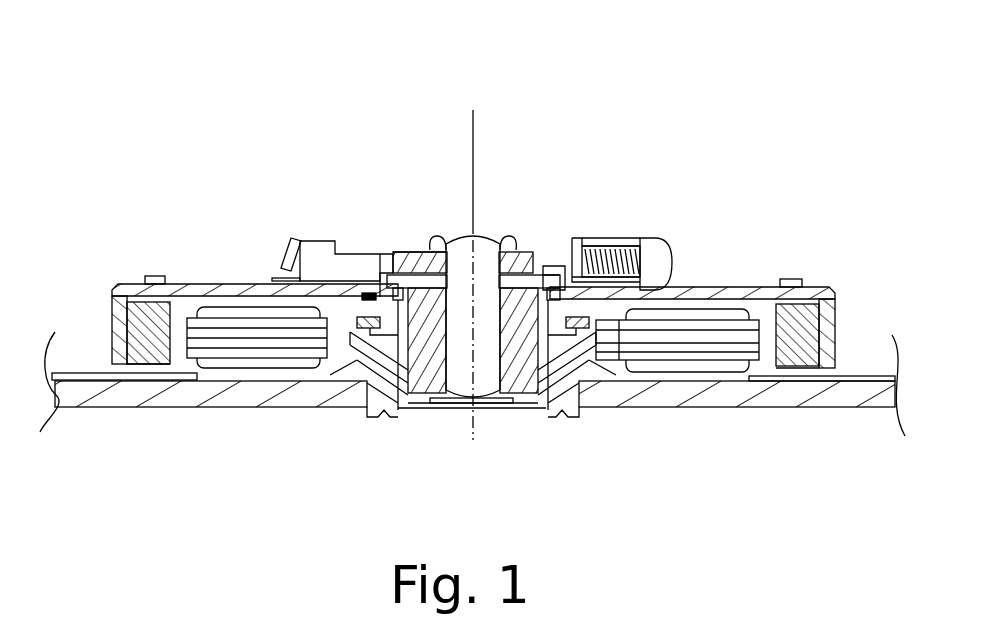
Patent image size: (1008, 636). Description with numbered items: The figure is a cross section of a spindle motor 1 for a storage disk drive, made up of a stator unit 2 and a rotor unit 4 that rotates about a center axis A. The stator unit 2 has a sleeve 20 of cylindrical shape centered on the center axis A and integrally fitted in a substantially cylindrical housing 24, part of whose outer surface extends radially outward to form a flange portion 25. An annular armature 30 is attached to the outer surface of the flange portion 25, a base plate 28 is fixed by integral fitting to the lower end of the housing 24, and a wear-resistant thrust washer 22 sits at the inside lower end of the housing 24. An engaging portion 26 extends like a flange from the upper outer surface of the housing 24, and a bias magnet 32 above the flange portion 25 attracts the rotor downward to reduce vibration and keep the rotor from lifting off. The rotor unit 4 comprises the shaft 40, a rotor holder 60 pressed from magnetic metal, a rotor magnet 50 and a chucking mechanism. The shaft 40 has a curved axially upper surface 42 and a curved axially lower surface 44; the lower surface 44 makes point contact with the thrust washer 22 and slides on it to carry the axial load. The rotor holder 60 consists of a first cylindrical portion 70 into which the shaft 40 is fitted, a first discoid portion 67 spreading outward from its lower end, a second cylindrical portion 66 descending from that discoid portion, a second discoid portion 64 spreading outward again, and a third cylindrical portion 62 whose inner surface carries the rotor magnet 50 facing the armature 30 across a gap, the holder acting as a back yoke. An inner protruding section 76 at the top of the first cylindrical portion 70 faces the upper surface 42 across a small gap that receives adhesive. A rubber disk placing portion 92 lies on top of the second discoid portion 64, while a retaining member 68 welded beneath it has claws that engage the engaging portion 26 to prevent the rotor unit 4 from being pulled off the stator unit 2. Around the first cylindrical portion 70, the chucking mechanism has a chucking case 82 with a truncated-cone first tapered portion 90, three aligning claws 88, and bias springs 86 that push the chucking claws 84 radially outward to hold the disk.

The motor 1 is at (536, 80).
The stator unit 2 is at (348, 439).
The rotor unit 4 is at (742, 238).
The center axis A is at (478, 470).
The sleeve 20 is at (406, 408).
The thrust washer 22 is at (438, 403).
The housing 24 is at (568, 372).
The flange portion 25 is at (340, 365).
The engaging portion 26 is at (398, 254).
The base plate 28 is at (753, 400).
The armature 30 is at (240, 358).
The bias magnet 32 is at (620, 378).
The shaft 40 is at (490, 240).
The axially upper surface 42 is at (478, 236).
The axially lower surface 44 is at (480, 400).
The rotor magnet 50 is at (810, 304).
The rotor holder 60 is at (821, 370).
The third cylindrical portion 62 is at (113, 295).
The second discoid portion 64 is at (174, 284).
The second cylindrical portion 66 is at (574, 238).
The first discoid portion 67 is at (537, 240).
The retaining member 68 is at (370, 281).
The first cylindrical portion 70 is at (426, 252).
The inner protruding section 76 is at (448, 236).
The chucking case 82 is at (322, 241).
The chucking claw 84 is at (667, 238).
The bias spring 86 is at (623, 246).
The aligning claw 88 is at (233, 278).
The first tapered portion 90 is at (290, 238).
The disk placing portion 92 is at (152, 276).